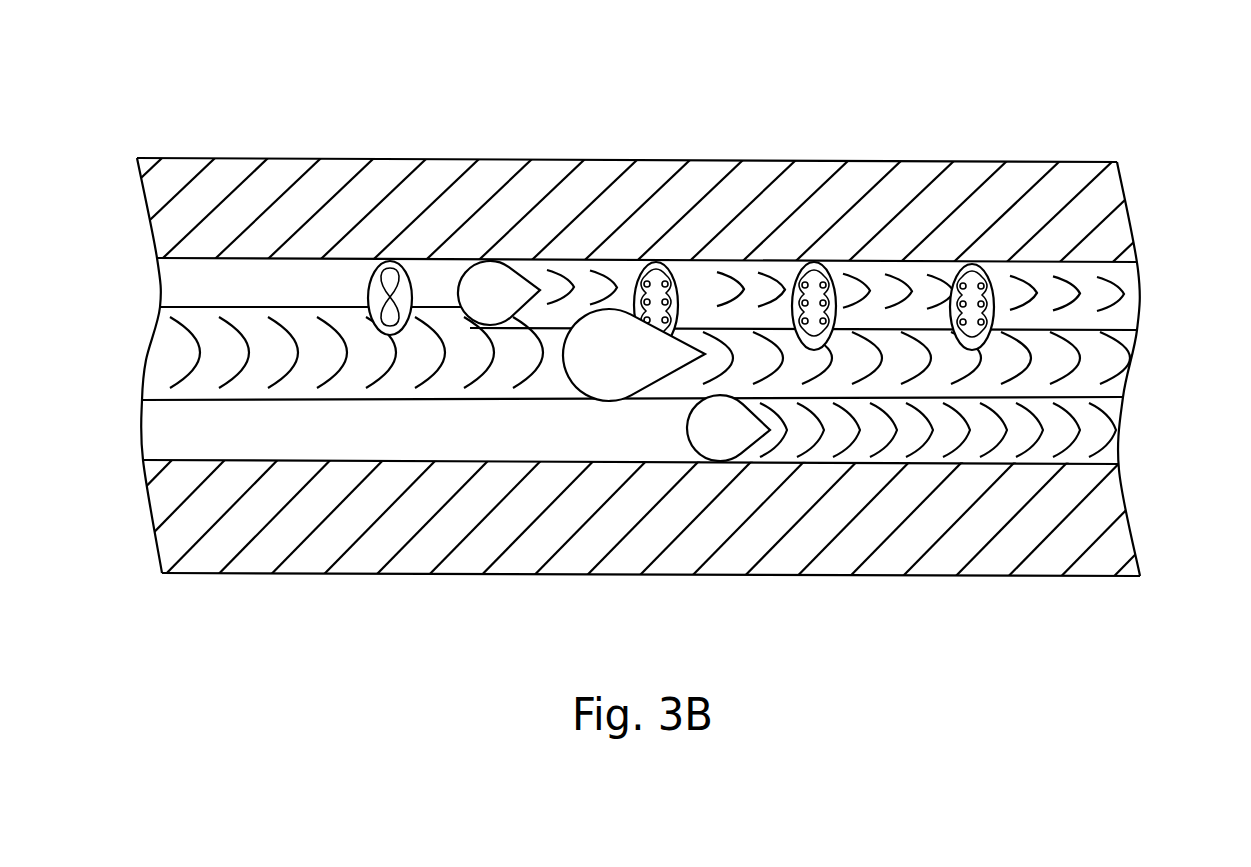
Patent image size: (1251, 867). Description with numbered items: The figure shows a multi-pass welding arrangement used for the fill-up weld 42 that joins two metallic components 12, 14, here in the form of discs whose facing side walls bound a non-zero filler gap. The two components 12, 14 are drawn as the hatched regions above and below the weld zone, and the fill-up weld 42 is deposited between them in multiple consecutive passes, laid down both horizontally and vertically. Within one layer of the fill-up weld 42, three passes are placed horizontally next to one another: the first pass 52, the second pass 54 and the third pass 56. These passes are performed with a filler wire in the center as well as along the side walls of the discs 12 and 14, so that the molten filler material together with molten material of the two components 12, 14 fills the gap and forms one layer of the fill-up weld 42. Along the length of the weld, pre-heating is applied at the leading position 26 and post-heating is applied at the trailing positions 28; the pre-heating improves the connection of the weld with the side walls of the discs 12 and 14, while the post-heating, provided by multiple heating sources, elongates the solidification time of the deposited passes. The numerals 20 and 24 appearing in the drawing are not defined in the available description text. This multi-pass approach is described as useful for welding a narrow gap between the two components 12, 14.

The metallic component 12 is at (637, 210).
The metallic component 14 is at (643, 518).
The droplets 20 is at (498, 292).
The cells / particles 24 is at (391, 262).
The leading position 26 is at (363, 284).
The trailing position 28 is at (689, 358).
The fill up weld 42 is at (1034, 98).
The first pass 52 is at (1120, 286).
The second pass 54 is at (1112, 360).
The third pass 56 is at (1115, 432).